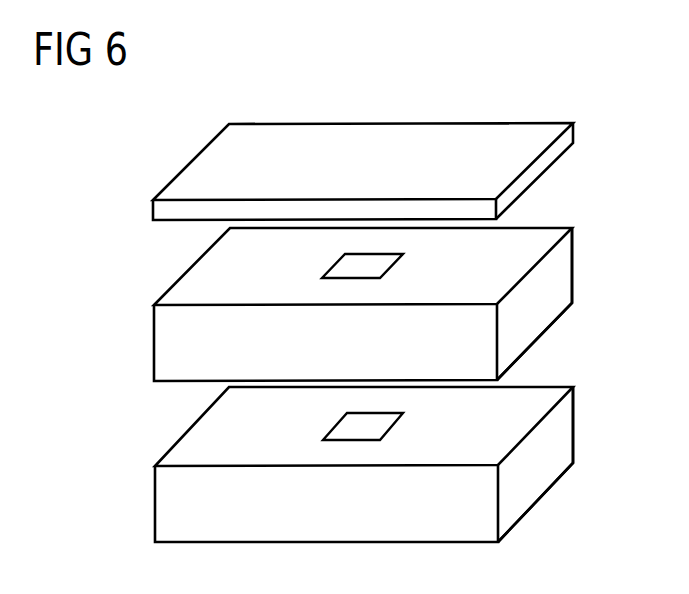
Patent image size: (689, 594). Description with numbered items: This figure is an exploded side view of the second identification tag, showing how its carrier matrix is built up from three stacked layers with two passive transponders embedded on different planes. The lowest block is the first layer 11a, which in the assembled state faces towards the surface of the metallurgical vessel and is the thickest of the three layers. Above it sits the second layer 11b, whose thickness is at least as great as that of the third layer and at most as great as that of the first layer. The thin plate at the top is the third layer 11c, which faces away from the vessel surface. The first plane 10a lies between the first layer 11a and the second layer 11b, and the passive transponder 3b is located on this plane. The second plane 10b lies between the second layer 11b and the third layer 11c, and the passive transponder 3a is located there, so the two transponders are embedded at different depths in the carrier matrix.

The third layer 11c is at (567, 137).
The second plane 10b is at (533, 240).
The second layer 11b is at (565, 283).
The passive transponder 3a is at (358, 270).
The first plane 10a is at (536, 405).
The first layer 11a is at (565, 448).
The passive transponder 3b is at (360, 430).